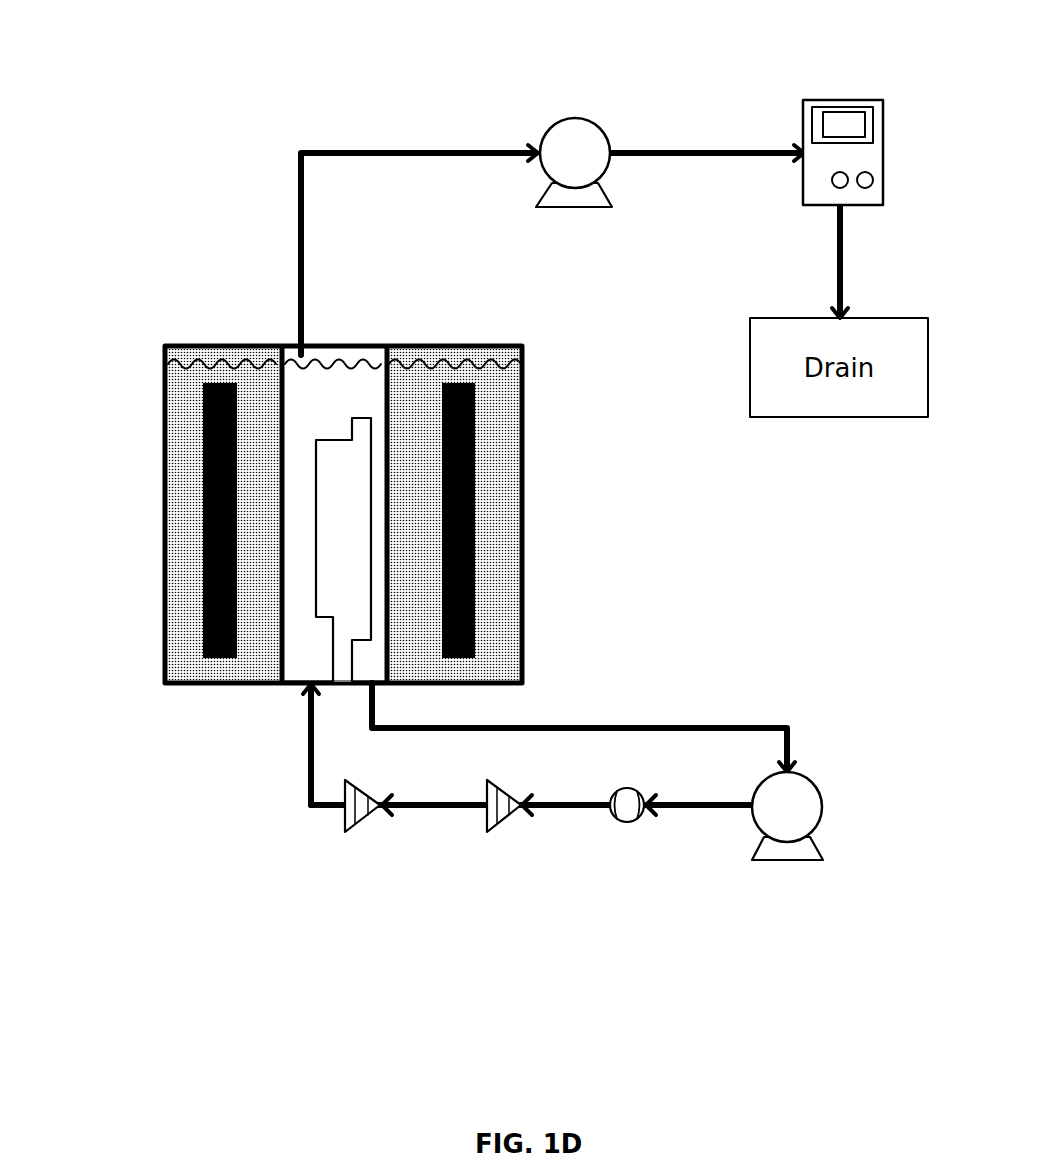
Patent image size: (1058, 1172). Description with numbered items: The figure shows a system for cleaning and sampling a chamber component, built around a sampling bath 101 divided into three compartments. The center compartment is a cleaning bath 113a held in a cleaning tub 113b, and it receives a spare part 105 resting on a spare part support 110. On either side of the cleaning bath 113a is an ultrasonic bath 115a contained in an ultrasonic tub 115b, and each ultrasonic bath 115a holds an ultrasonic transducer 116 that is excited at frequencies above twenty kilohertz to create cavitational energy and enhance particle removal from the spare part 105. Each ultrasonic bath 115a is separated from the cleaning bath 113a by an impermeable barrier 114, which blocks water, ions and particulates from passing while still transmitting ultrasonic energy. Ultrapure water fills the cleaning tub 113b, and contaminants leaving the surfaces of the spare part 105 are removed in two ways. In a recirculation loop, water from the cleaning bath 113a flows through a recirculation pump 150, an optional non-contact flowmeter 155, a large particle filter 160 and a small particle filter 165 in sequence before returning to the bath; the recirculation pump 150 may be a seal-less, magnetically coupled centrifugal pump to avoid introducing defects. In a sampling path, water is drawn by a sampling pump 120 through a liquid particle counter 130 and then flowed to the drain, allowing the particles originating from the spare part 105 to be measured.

The sampling bath 101 is at (165, 557).
The spare part 105 is at (327, 519).
The spare part support 110 is at (343, 670).
The cleaning bath 113a is at (325, 402).
The cleaning tub 113b is at (362, 355).
The impermeable barrier 114 is at (282, 365).
The ultrasonic bath 115a is at (188, 435).
The ultrasonic tub 115b is at (167, 362).
The ultrasonic transducer 116 is at (200, 490).
The sampling pump 120 is at (600, 135).
The liquid particle counter 130 is at (870, 100).
The recirculation pump 150 is at (825, 795).
The flowmeter 155 is at (627, 825).
The large particle filter 160 is at (487, 830).
The small particle filter 165 is at (345, 830).